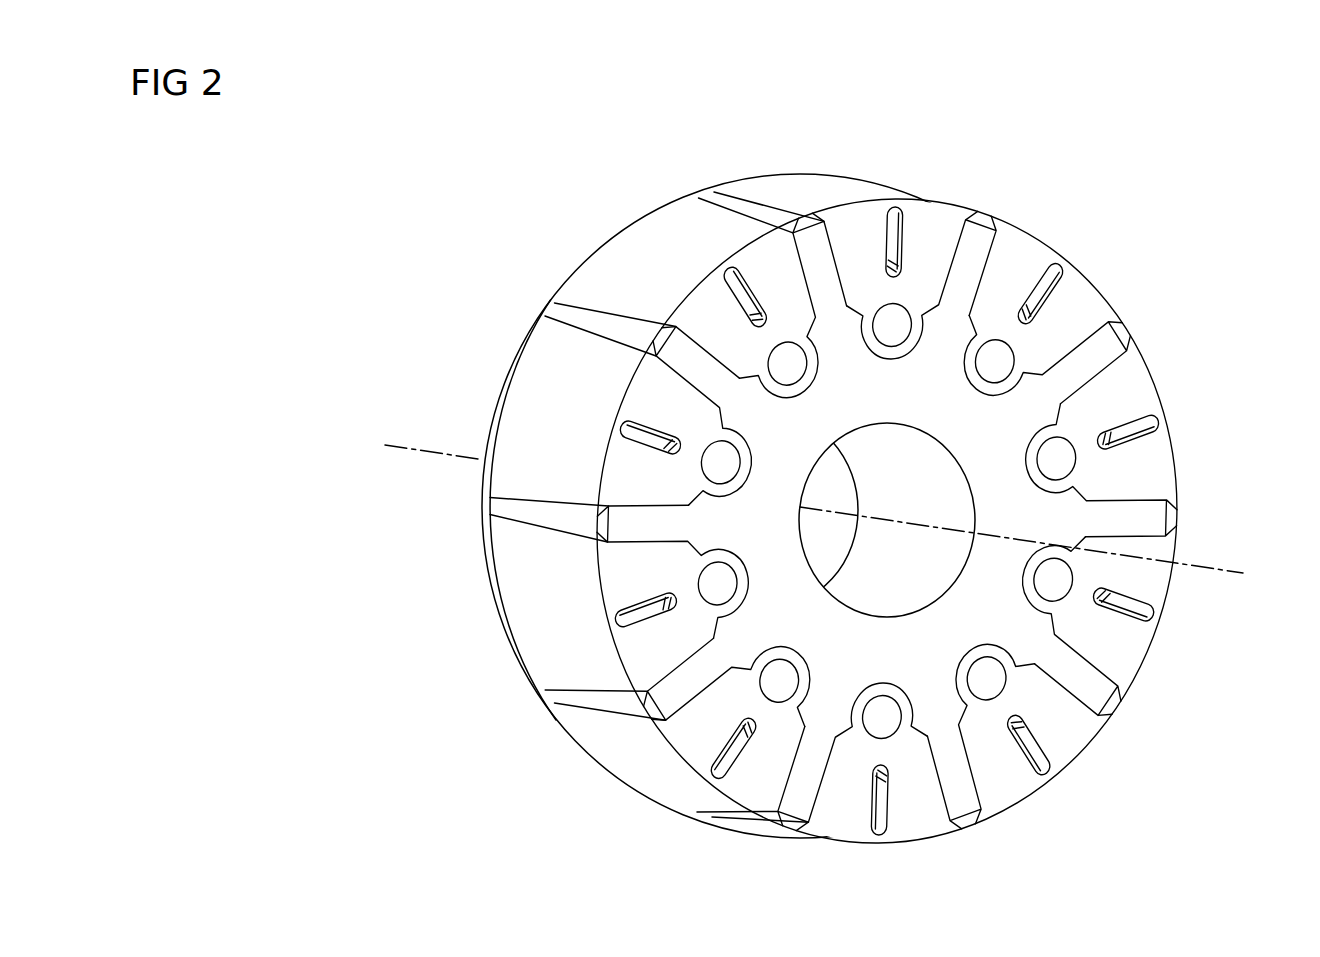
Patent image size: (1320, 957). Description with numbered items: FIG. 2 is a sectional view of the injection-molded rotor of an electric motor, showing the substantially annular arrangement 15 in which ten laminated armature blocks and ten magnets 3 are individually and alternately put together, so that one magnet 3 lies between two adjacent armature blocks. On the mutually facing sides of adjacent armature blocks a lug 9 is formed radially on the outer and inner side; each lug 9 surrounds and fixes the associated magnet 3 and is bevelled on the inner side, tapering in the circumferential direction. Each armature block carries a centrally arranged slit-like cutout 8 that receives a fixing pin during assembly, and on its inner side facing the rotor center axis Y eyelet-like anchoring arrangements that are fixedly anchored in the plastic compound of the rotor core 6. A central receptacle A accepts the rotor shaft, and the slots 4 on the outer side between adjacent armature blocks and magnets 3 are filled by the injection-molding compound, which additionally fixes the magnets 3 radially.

The magnet 3 is at (818, 258).
The slot 4 is at (678, 338).
The rotor core 6 is at (972, 428).
The cutout 8 is at (752, 288).
The lug 9 is at (930, 300).
The annular arrangement 15 is at (1194, 798).
The receptacle A is at (928, 553).
The rotor center axis Y is at (813, 508).